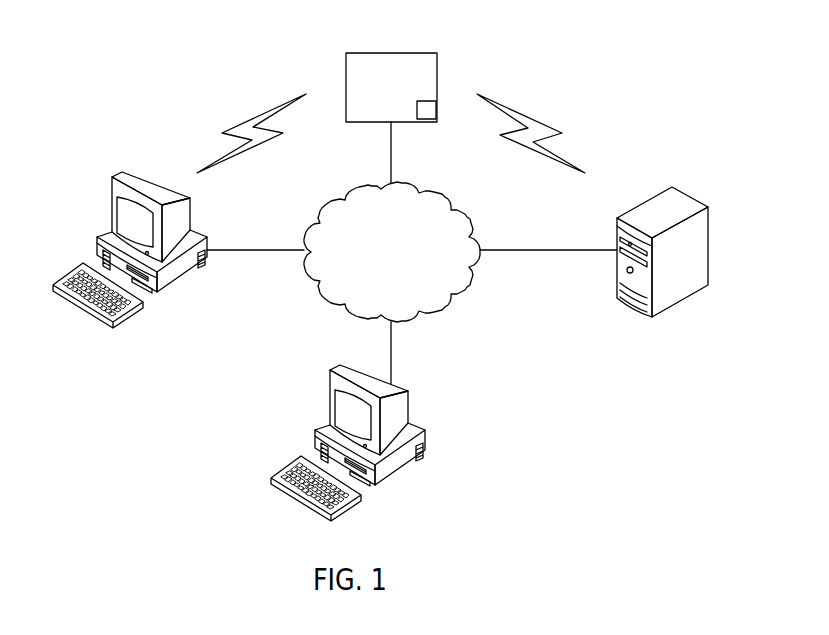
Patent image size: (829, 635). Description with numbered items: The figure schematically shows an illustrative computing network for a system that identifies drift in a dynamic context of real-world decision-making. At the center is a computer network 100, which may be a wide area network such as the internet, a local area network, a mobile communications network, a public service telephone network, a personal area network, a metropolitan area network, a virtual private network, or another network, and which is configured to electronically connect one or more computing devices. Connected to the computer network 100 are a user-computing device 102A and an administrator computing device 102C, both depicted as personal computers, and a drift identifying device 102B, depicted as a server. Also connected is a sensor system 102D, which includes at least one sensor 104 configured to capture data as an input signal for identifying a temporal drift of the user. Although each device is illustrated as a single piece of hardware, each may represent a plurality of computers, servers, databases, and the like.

The computer network 100 is at (455, 201).
The user-computing device 102A is at (112, 186).
The drift identifying device 102B is at (710, 221).
The administrator computing device 102C is at (330, 380).
The sensor system 102D is at (439, 71).
The sensor 104 is at (427, 121).